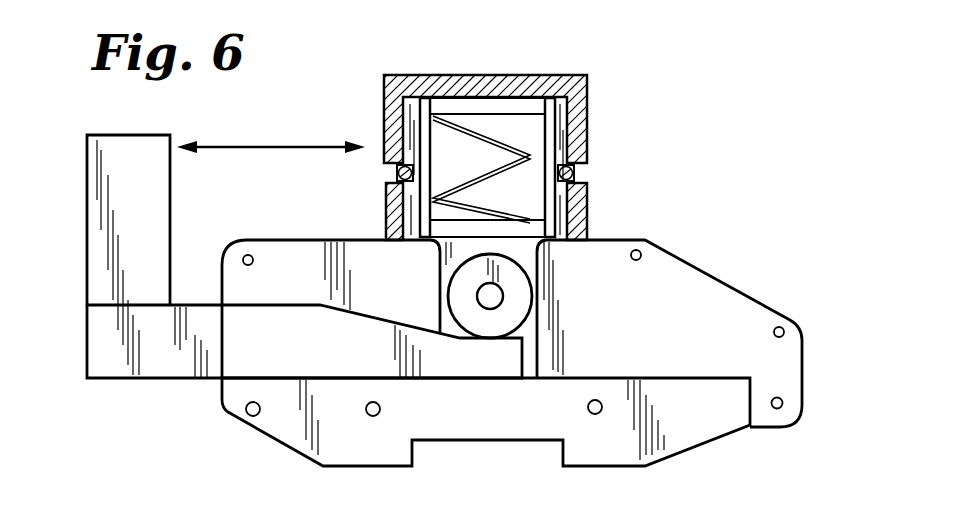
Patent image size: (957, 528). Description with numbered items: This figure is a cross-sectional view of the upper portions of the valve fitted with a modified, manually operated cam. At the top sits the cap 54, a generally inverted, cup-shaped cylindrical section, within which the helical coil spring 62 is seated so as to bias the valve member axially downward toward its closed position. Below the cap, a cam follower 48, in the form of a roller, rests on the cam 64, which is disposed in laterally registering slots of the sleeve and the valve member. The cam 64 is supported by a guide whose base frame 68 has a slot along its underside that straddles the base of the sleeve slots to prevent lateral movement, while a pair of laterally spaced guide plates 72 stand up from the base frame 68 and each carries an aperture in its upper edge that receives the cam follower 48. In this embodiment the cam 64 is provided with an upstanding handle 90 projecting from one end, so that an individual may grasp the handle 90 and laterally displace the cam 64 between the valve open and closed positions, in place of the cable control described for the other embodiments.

The cam follower 48 is at (525, 272).
The cap 54 is at (383, 103).
The helical coil spring 62 is at (478, 145).
The cam 64 is at (300, 341).
The base frame 68 is at (595, 452).
The guide plates 72 is at (715, 277).
The handle 90 is at (88, 178).